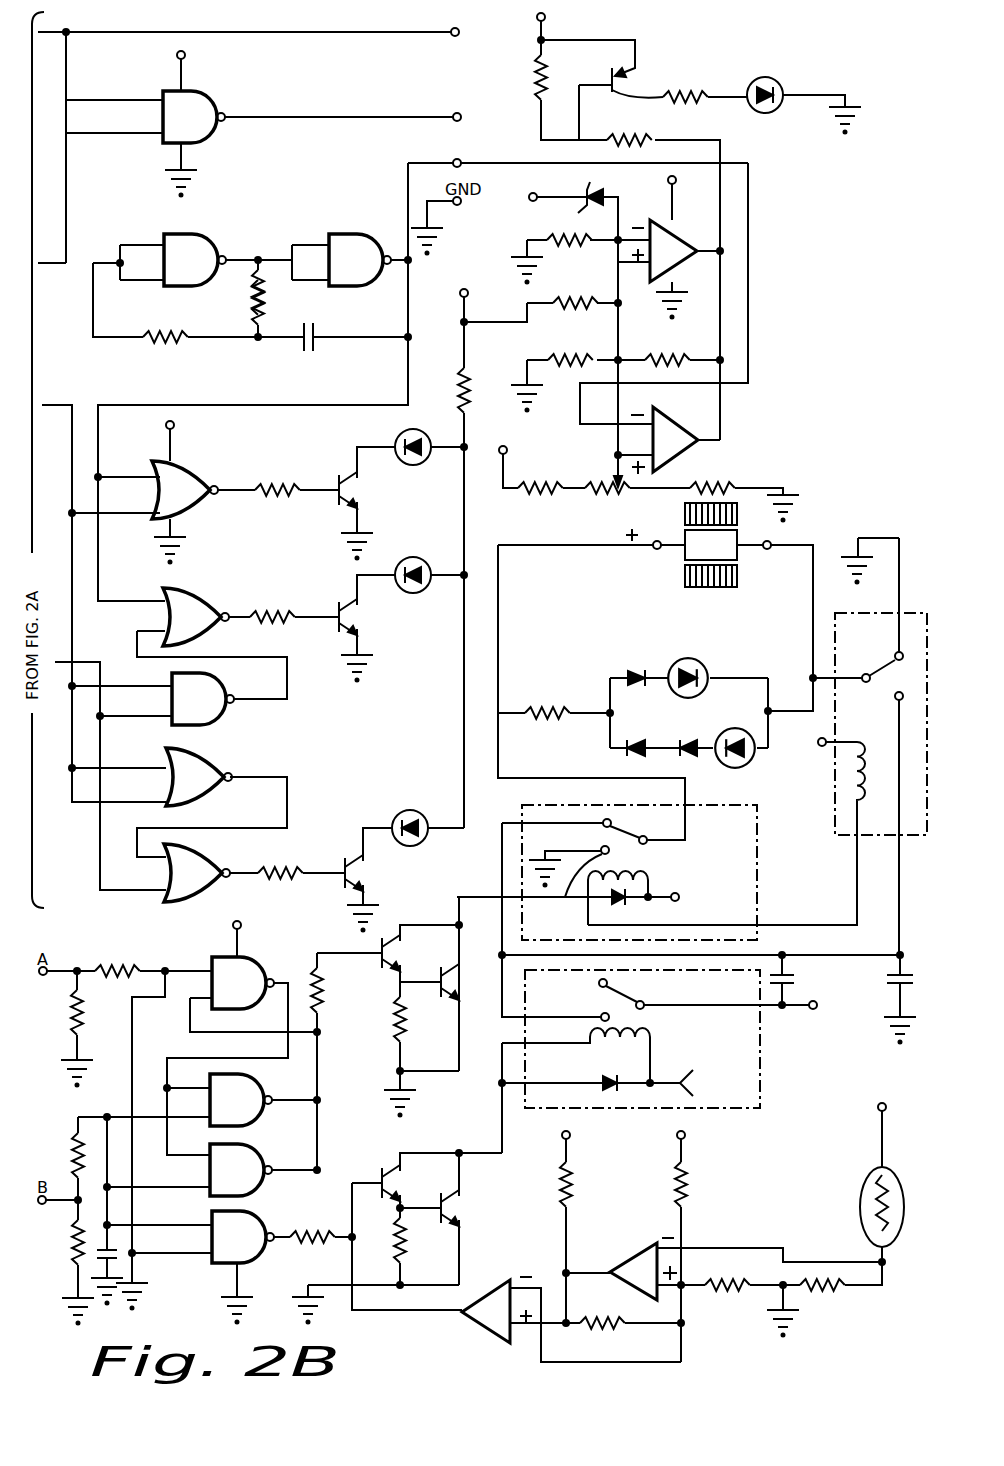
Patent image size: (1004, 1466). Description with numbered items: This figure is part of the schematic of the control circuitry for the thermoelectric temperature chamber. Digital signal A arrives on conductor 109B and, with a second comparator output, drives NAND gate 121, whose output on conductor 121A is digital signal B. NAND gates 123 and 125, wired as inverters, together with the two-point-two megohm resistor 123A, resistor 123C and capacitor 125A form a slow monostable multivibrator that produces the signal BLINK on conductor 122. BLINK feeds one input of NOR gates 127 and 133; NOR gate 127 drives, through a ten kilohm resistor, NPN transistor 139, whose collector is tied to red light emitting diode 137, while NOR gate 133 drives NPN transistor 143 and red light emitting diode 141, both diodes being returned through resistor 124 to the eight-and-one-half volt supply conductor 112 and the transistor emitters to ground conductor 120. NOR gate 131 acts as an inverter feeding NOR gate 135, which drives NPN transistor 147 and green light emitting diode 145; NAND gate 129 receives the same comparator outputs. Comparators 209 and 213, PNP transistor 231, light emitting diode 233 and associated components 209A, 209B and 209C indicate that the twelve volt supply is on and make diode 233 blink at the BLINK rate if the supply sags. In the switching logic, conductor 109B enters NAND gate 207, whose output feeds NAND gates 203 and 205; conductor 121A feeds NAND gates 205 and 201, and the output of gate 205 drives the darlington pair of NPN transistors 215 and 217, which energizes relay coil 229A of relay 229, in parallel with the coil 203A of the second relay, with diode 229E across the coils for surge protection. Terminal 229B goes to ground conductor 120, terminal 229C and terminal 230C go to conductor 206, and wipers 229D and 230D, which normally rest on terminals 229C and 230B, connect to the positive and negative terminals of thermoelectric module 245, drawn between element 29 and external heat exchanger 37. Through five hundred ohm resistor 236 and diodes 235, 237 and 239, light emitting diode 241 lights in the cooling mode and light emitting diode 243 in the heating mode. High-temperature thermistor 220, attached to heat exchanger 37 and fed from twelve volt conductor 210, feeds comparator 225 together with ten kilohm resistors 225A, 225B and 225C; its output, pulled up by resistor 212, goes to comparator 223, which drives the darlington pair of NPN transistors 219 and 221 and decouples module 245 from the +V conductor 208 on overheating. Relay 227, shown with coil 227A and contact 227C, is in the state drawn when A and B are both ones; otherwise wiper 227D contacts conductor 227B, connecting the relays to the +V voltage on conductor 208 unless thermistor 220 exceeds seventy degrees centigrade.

The thermoelectric module top plate 29 is at (685, 512).
The external heat exchanger 37 is at (738, 576).
The conductor 109B is at (400, 28).
The 8.5 volt supply voltage conductor 112 is at (536, 17).
The ground conductor 120 is at (858, 105).
The NAND gate 121 is at (215, 94).
The conductor 121A is at (395, 115).
The conductor 122 is at (405, 188).
The NAND gate 123 is at (206, 235).
The resistor 123A is at (178, 345).
The resistor 123C is at (245, 292).
The resistor 124 is at (459, 383).
The NAND gate 125 is at (357, 233).
The capacitor 125A is at (315, 338).
The NOR gate 127 is at (202, 462).
The NAND gate 129 is at (218, 716).
The NOR gate 131 is at (207, 759).
The NOR gate 133 is at (198, 593).
The NOR gate 135 is at (208, 856).
The red light emitting diode 137 is at (398, 428).
The NPN transistor 139 is at (343, 468).
The red light emitting diode 141 is at (405, 557).
The NPN transistor 143 is at (353, 611).
The green light emitting diode 145 is at (423, 843).
The NPN transistor 147 is at (350, 855).
The NAND gate 201 is at (257, 1210).
The NAND gate 203 is at (260, 1150).
The relay coil 203A is at (855, 790).
The NAND gate 205 is at (262, 1114).
The conductor 206 is at (500, 867).
The NAND gate 207 is at (258, 961).
The +V voltage source conductor 208 is at (816, 1005).
The comparator 209 is at (680, 234).
The resistor 209A is at (572, 235).
The resistor 209B is at (595, 283).
The resistor 209C is at (582, 344).
The 12 volt supply conductor 210 is at (532, 195).
The resistor 212 is at (573, 1188).
The comparator 213 is at (686, 459).
The NPN transistor 215 is at (378, 972).
The NPN transistor 217 is at (441, 1000).
The NPN transistor 219 is at (387, 1169).
The high temperature thermistor 220 is at (862, 1188).
The NPN transistor 221 is at (461, 1187).
The comparator 223 is at (472, 1320).
The comparator 225 is at (625, 1262).
The resistor 225A is at (692, 1187).
The resistor 225B is at (738, 1292).
The resistor 225C is at (839, 1286).
The relay 227 is at (763, 1053).
The relay coil 227A is at (653, 1035).
The conductor 227B is at (600, 1014).
The relay contact 227C is at (598, 987).
The relay wiper 227D is at (631, 993).
The relay 229 is at (758, 898).
The relay coil 229A is at (647, 882).
The terminal 229B is at (569, 886).
The terminal 229C is at (610, 819).
The wiper 229D is at (628, 850).
The diode 229E is at (614, 904).
The terminal 230B is at (895, 651).
The terminal 230C is at (895, 700).
The wiper 230D is at (865, 676).
The PNP transistor 231 is at (608, 75).
The light emitting diode 233 is at (768, 110).
The diode 235 is at (637, 667).
The resistor 236 is at (550, 706).
The diode 237 is at (645, 743).
The diode 239 is at (692, 742).
The light emitting diode 241 is at (709, 687).
The light emitting diode 243 is at (730, 766).
The thermoelectric module 245 is at (685, 557).